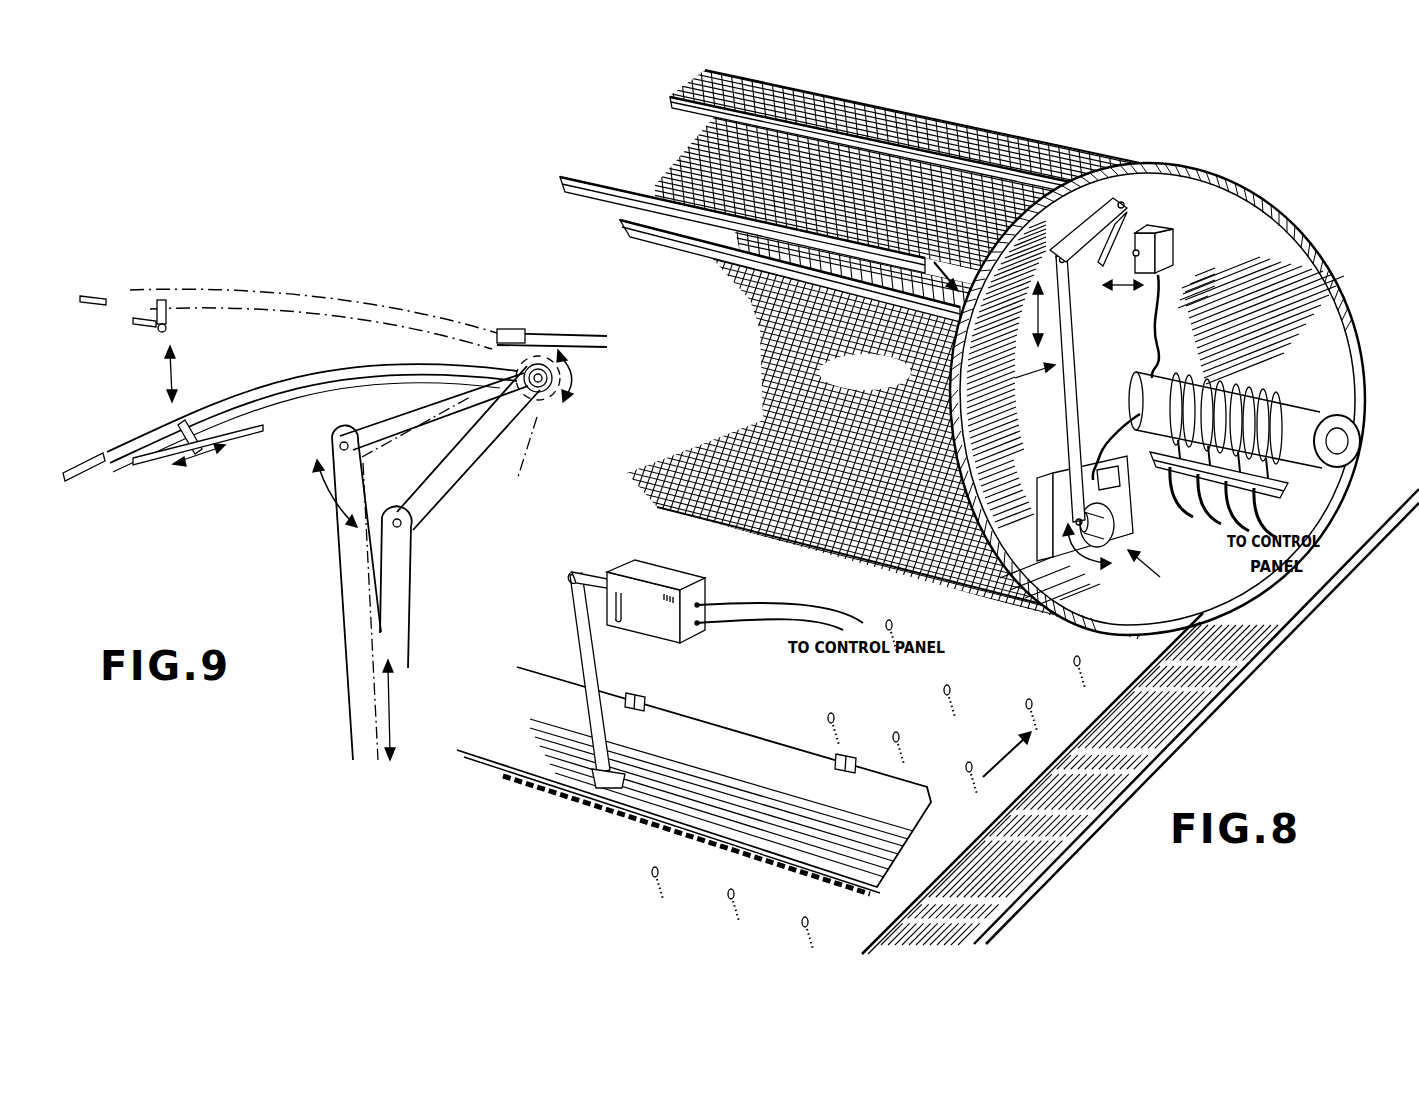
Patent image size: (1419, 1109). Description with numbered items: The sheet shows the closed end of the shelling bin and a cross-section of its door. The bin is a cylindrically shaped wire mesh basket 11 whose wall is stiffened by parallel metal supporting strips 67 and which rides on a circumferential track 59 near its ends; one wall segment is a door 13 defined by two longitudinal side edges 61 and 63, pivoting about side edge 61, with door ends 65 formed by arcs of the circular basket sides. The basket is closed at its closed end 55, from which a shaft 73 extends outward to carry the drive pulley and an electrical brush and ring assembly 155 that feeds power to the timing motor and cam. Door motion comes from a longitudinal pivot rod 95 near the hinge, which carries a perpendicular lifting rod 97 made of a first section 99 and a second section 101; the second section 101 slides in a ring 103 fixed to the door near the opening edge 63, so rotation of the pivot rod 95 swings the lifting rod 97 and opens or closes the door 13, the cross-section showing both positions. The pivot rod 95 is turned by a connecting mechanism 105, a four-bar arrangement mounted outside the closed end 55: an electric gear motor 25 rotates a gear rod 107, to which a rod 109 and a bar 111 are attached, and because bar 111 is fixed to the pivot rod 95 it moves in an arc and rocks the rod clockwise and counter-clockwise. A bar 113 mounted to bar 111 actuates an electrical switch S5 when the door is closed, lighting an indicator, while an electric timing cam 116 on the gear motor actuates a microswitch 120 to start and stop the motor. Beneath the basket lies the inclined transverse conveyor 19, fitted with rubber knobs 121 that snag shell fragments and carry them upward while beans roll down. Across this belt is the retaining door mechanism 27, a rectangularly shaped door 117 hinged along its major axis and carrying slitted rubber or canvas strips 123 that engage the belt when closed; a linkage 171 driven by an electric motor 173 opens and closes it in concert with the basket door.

In FIG. 8, the wire mesh basket 11 is at (1050, 138).
In FIG. 8, the door 13 is at (913, 192).
In FIG. 9, the door 13 is at (207, 287).
In FIG. 8, the transverse conveyor 19 is at (1208, 708).
In FIG. 8, the electric gear motor 25 is at (1157, 576).
In FIG. 8, the retaining door mechanism 27 is at (930, 803).
In FIG. 8, the closed end 55 is at (1233, 213).
In FIG. 8, the circumferential track 59 is at (1134, 164).
In FIG. 8, the side edge 61 is at (880, 138).
In FIG. 8, the opening edge 63 is at (883, 262).
In FIG. 9, the opening edge 63 is at (83, 300).
In FIG. 8, the door ends 65 is at (988, 185).
In FIG. 8, the metal supporting strips 67 is at (773, 262).
In FIG. 8, the shaft 73 is at (1313, 418).
In FIG. 8, the longitudinal pivot rod 95 is at (1126, 201).
In FIG. 9, the longitudinal pivot rod 95 is at (545, 398).
In FIG. 9, the lifting rod 97 is at (182, 323).
In FIG. 9, the first section 99 is at (367, 330).
In FIG. 9, the second section 101 is at (264, 322).
In FIG. 9, the ring 103 is at (160, 330).
In FIG. 8, the connecting mechanism 105 is at (1017, 378).
In FIG. 8, the gear rod 107 is at (1073, 545).
In FIG. 8, the rod 109 is at (1070, 363).
In FIG. 8, the bar 111 is at (1101, 212).
In FIG. 8, the bar 113 is at (1097, 267).
In FIG. 8, the electric timing cam 116 is at (1118, 520).
In FIG. 8, the rectangularly shaped door 117 is at (705, 765).
In FIG. 8, the microswitch 120 is at (1122, 486).
In FIG. 8, the knobs 121 is at (1082, 660).
In FIG. 8, the rubber or canvas strips 123 is at (637, 813).
In FIG. 8, the electrical brush and ring assembly 155 is at (1308, 472).
In FIG. 8, the linkage 171 is at (593, 655).
In FIG. 8, the electric motor 173 is at (697, 594).
In FIG. 8, the electrical switch S5 is at (1174, 248).